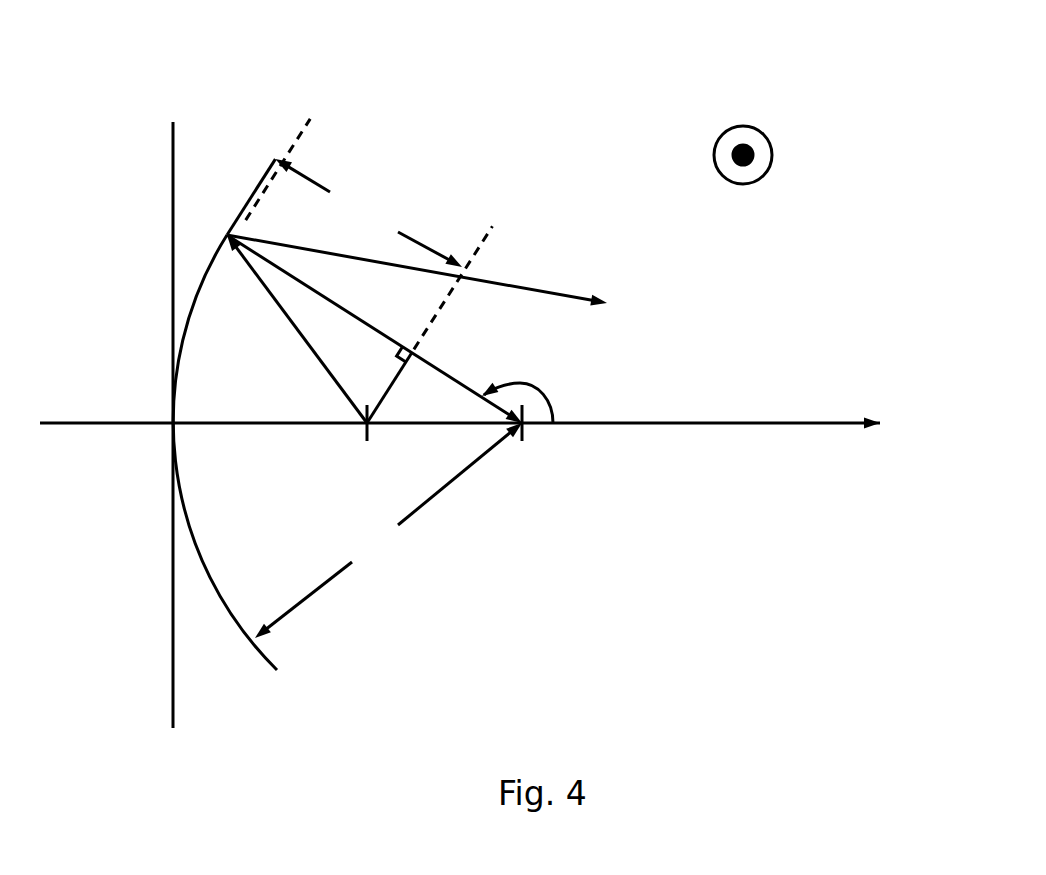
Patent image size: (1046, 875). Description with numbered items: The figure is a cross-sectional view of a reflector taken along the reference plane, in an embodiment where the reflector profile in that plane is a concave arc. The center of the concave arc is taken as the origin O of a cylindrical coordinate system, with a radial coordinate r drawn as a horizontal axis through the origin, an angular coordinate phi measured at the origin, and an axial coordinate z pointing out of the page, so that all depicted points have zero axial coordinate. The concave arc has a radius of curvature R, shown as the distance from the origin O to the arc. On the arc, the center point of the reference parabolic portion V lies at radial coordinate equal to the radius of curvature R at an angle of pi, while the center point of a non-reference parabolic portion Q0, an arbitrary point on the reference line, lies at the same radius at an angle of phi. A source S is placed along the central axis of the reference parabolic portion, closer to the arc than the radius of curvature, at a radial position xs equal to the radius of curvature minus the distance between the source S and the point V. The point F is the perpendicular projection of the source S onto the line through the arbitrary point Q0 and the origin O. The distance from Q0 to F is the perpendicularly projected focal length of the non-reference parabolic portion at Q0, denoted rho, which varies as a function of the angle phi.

The center point of non-reference parabolic portion Q0 is at (396, 212).
The center point of reference parabolic portion V is at (155, 425).
The source S is at (297, 350).
The perpendicularly projected point F is at (429, 324).
The origin O is at (392, 351).
The radius of curvature R is at (388, 530).
The radial coordinate r is at (461, 448).
The z coordinate z is at (771, 156).
The source radial position xs is at (439, 448).
The angular coordinate phi is at (527, 396).
The perpendicularly projected focal length rho is at (368, 213).